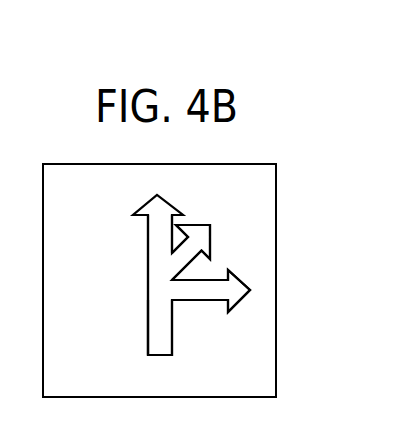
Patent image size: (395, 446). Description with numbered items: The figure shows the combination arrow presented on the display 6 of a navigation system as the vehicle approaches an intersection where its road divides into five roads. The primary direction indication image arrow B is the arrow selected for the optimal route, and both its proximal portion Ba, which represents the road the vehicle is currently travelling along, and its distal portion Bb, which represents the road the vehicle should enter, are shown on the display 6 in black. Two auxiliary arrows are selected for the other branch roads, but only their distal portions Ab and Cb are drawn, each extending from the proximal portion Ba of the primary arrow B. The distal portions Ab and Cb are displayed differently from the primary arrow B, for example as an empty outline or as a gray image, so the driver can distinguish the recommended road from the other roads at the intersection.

The display 6 is at (276, 192).
The primary direction indication image arrow B is at (208, 217).
The distal portion of auxiliary arrow A Ab is at (148, 246).
The proximal portion of primary arrow B Ba is at (148, 334).
The distal portion of primary arrow B Bb is at (211, 234).
The distal portion of auxiliary arrow C Cb is at (204, 301).